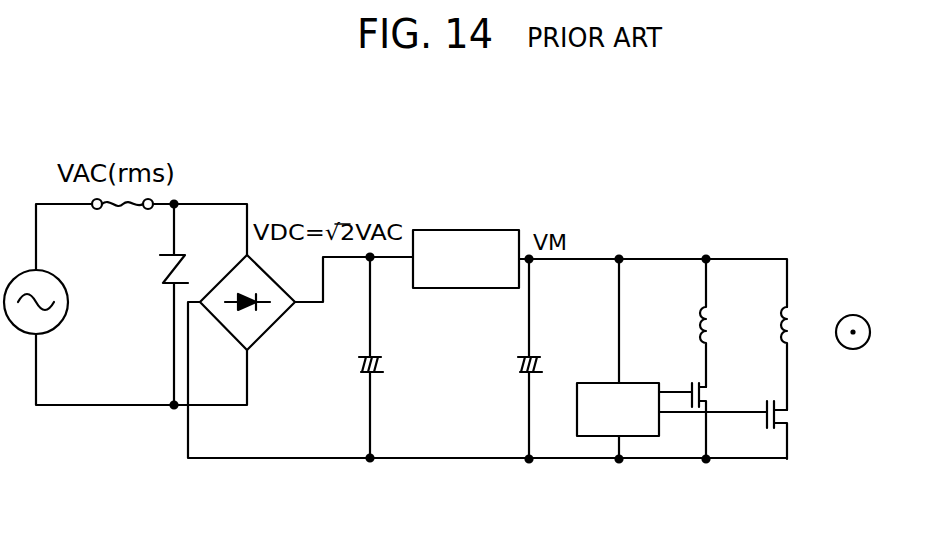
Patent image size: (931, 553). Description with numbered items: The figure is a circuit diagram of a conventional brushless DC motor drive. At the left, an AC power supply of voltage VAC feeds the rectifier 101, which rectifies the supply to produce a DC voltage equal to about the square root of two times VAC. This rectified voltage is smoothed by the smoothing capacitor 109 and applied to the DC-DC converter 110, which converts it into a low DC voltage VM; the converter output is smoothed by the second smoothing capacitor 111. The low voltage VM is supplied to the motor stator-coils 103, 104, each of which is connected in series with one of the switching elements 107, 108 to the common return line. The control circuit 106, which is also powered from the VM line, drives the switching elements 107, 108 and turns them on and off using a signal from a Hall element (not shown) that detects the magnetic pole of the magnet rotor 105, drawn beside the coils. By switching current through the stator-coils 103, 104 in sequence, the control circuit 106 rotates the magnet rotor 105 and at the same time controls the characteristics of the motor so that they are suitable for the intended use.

The rectifier 101 is at (271, 326).
The motor stator-coil 103 is at (707, 310).
The motor stator-coil 104 is at (788, 312).
The magnet rotor 105 is at (863, 317).
The control circuit 106 is at (598, 436).
The switching element 107 is at (690, 383).
The switching element 108 is at (775, 426).
The smoothing capacitor 109 is at (360, 380).
The DC-DC converter 110 is at (463, 230).
The smoothing capacitor 111 is at (520, 380).